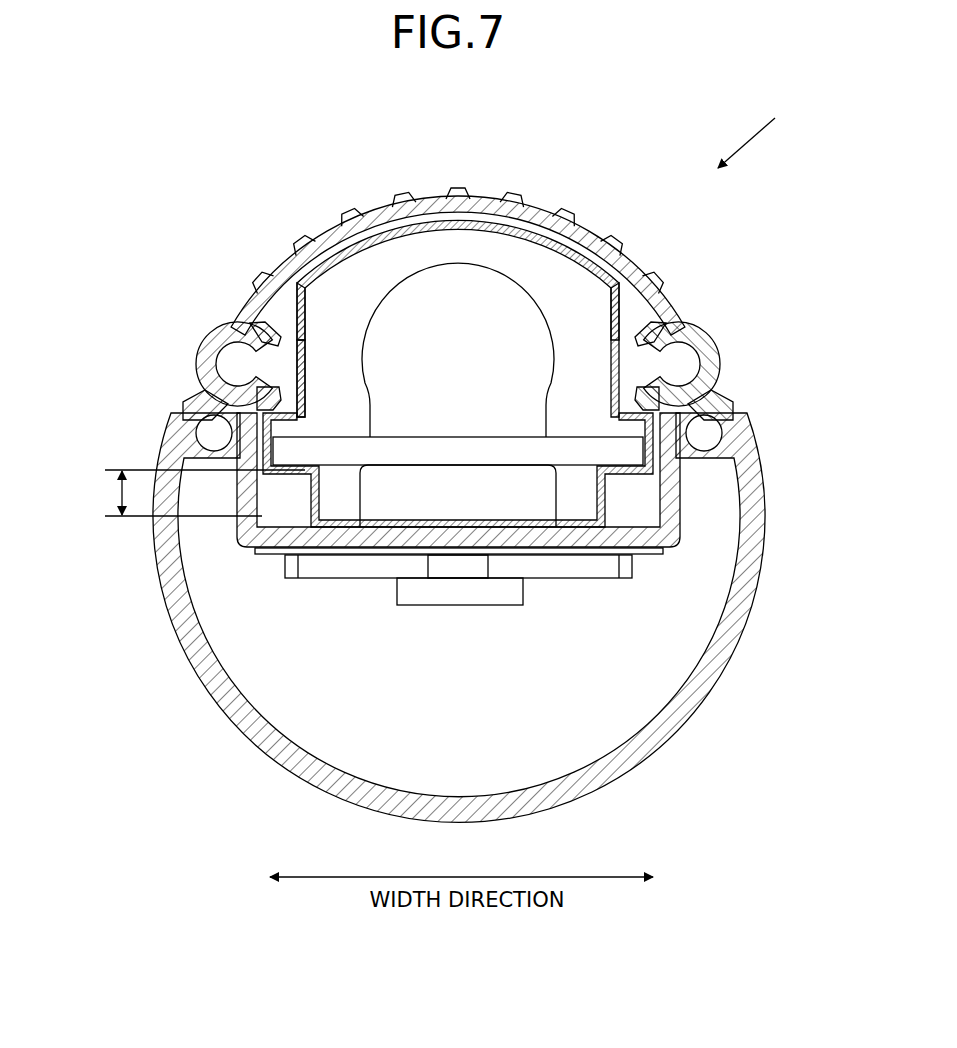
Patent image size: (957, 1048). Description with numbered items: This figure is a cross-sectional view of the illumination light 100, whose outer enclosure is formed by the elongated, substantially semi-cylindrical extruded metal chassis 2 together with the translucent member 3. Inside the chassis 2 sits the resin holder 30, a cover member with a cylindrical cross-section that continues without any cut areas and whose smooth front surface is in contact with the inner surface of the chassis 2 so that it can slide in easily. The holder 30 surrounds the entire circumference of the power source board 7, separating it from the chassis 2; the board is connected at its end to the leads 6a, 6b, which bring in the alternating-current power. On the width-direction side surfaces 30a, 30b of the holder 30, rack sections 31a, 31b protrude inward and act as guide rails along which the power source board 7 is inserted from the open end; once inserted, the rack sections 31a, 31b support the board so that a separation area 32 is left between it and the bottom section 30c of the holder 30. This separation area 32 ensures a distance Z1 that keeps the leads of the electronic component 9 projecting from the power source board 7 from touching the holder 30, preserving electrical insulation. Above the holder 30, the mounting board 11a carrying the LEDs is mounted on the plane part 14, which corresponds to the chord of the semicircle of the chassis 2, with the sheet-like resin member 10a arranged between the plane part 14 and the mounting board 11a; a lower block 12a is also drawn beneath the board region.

The illumination light 100 is at (769, 134).
The chassis 2 is at (332, 227).
The translucent member 3 is at (683, 745).
The holder 30 is at (443, 221).
The side surface 30a is at (295, 293).
The side surface 30b is at (621, 293).
The bottom section 30c is at (388, 528).
The electronic component 9 is at (532, 224).
The lead 6a is at (200, 383).
The lead 6b is at (716, 383).
The power source board 7 is at (297, 380).
The rack section 31a is at (165, 416).
The rack section 31b is at (662, 470).
The separation area 32 is at (606, 491).
The plane part 14 is at (667, 547).
The sheet-like resin member 10a is at (263, 551).
The mounting board 11a is at (315, 565).
The connector block 12a is at (455, 600).
The distance Z1 is at (187, 493).